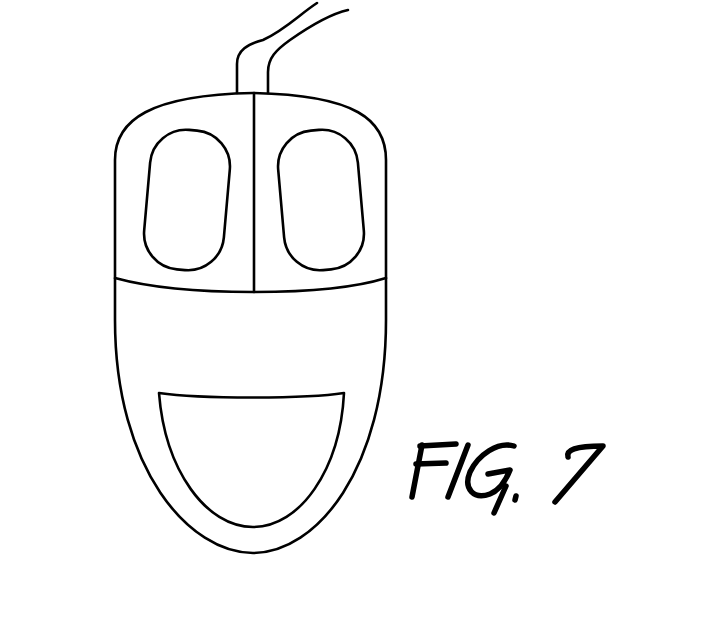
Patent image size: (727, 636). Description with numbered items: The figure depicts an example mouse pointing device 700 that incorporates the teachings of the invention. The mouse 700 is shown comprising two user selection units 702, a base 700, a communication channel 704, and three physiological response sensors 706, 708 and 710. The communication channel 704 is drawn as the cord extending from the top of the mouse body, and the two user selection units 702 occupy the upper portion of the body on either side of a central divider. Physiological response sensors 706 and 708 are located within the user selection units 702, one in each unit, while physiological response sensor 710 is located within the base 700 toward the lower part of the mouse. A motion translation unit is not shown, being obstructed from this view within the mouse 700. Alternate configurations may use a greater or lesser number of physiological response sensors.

The mouse pointing device 700 is at (467, 65).
The user selection unit 702 is at (128, 268).
The communication channel 704 is at (261, 60).
The physiological response sensor 706 is at (347, 210).
The physiological response sensor 708 is at (170, 170).
The physiological response sensor 710 is at (200, 470).